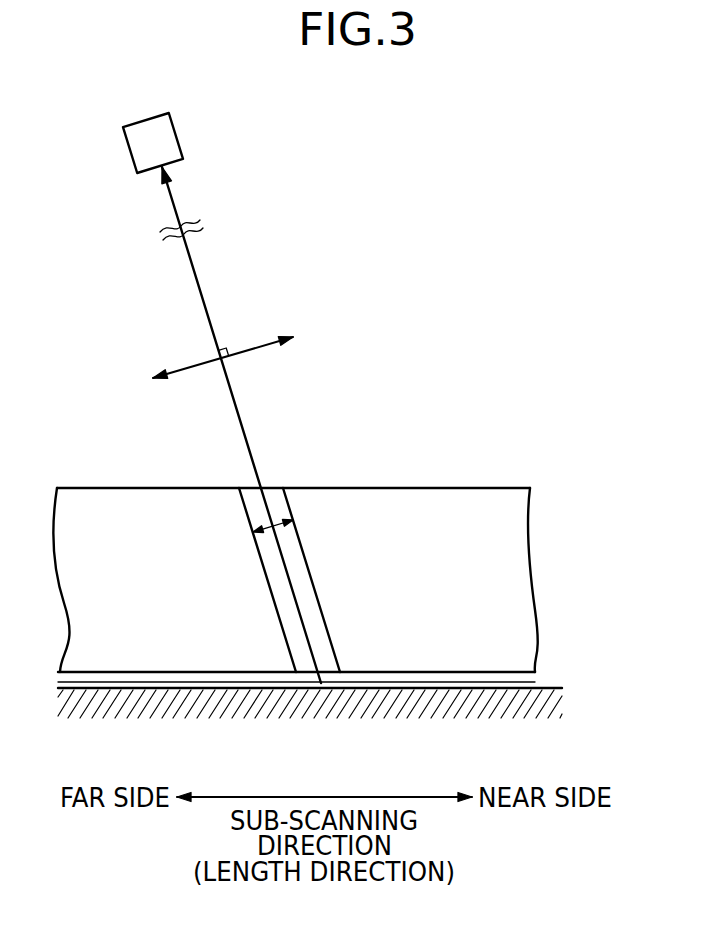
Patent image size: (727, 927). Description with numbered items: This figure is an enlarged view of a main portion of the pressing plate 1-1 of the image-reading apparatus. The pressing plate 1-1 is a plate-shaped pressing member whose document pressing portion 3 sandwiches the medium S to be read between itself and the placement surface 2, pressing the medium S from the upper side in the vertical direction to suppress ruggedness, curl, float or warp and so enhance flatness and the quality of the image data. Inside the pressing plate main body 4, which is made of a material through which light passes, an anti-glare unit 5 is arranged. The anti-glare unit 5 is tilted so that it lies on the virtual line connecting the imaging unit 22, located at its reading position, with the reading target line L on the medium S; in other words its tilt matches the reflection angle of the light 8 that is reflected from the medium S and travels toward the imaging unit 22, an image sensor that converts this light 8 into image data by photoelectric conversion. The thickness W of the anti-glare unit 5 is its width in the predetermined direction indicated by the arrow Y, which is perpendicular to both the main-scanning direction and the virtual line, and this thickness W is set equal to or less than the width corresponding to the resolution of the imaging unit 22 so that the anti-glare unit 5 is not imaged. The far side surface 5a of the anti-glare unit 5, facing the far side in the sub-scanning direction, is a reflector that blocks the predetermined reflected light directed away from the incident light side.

The pressing plate 1-1 is at (492, 460).
The placement surface 2 is at (547, 688).
The document pressing portion 3 is at (443, 674).
The pressing plate main body 4 is at (437, 487).
The anti-glare unit 5 is at (283, 551).
The far side surface 5a is at (247, 518).
The light 8 is at (197, 270).
The imaging unit 22 is at (177, 135).
The thickness of the anti-glare unit W is at (276, 522).
The arrow indicating the predetermined direction Y is at (264, 343).
The medium to be read S is at (525, 680).
The reading target line L is at (320, 702).